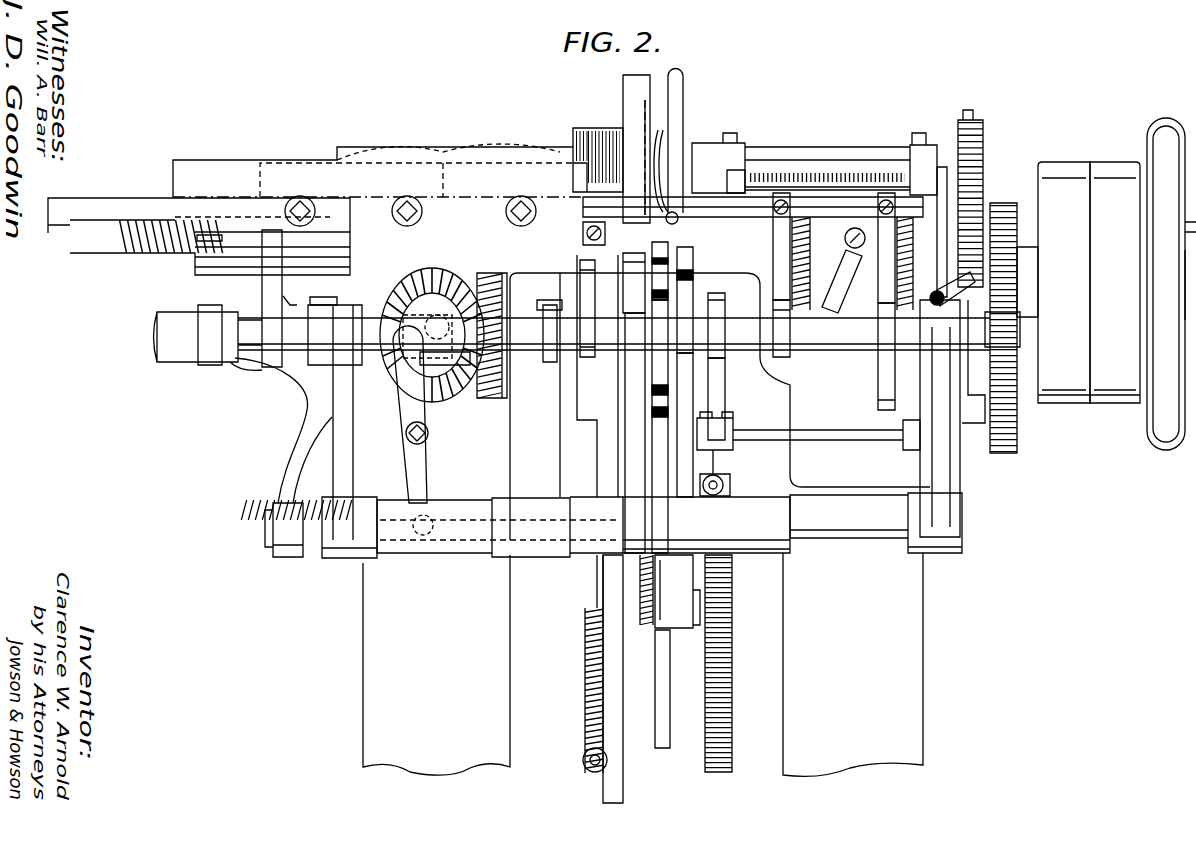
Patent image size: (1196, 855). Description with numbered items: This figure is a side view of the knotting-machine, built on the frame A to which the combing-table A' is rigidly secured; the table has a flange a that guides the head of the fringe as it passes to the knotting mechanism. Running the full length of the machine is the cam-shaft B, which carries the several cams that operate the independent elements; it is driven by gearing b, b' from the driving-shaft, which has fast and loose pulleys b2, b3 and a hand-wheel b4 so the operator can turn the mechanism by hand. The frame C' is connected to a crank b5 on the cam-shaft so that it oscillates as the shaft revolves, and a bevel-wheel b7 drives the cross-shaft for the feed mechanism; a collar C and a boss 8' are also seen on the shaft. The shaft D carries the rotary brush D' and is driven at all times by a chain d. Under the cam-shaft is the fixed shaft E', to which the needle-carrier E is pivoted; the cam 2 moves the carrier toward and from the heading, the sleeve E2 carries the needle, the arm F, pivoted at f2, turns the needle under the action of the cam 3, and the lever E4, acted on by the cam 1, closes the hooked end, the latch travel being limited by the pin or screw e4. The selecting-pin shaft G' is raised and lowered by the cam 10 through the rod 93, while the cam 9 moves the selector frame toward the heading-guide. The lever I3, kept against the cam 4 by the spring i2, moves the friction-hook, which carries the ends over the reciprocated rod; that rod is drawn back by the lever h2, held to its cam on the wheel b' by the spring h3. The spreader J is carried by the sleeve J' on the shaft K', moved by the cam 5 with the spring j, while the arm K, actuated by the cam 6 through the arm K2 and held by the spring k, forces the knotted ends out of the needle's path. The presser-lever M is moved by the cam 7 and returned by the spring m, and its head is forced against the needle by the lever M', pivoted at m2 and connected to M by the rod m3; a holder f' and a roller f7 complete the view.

The combing-table A' is at (367, 185).
The flange a is at (417, 178).
The shaft G' is at (199, 236).
The cam 10 is at (228, 300).
The rod 93 is at (296, 294).
The cam-shaft B is at (614, 422).
The crank b5 is at (432, 270).
The bevel-wheel b7 is at (487, 275).
The crank boss 8' is at (436, 340).
The lever M' is at (407, 414).
The pivot m2 is at (429, 433).
The presser-lever M is at (720, 397).
The cam 9 is at (554, 324).
The cam 7 is at (587, 308).
The cam 1 is at (634, 271).
The lever E4 is at (635, 433).
The cam 2 is at (660, 260).
The sleeve E2 is at (660, 426).
The cam 3 is at (685, 290).
The arm F is at (685, 425).
The cam 4 is at (716, 325).
The lever I3 is at (724, 395).
The roller f7 is at (727, 483).
The needle-carrier E is at (706, 525).
The fixed shaft E' is at (876, 523).
The frame A is at (643, 664).
The spring m is at (593, 679).
The pin or screw e4 is at (656, 650).
The pivot f2 is at (656, 621).
The spring i2 is at (726, 663).
The rod m3 is at (475, 540).
The frame C' is at (306, 458).
The collar C is at (275, 530).
The spreader J is at (624, 149).
The arm K is at (676, 147).
The rotary brush D' is at (598, 151).
The sleeve J' is at (753, 205).
The shaft K' is at (713, 207).
The shaft D is at (814, 164).
The spring h3 is at (796, 172).
The holder f' is at (781, 246).
The cam 5 is at (781, 328).
The spring j is at (828, 265).
The arm K2 is at (886, 248).
The cam 6 is at (886, 356).
The spring k is at (910, 263).
The lever h2 is at (952, 352).
The chain d is at (984, 196).
The gear b' is at (1003, 318).
The gear b is at (1011, 290).
The fast pulley b2 is at (1064, 282).
The loose pulley b3 is at (1115, 282).
The hand-wheel b4 is at (1171, 284).